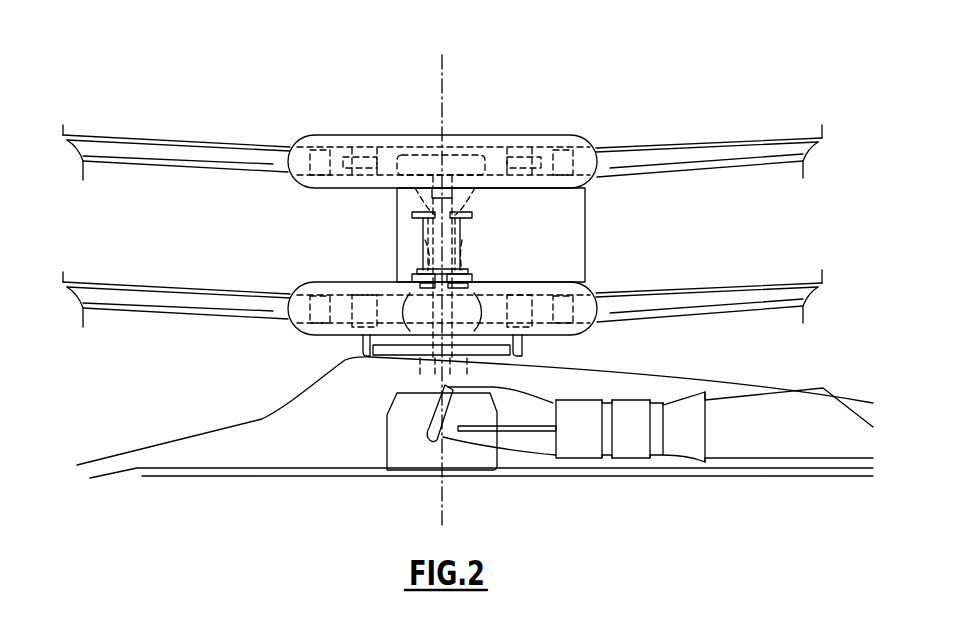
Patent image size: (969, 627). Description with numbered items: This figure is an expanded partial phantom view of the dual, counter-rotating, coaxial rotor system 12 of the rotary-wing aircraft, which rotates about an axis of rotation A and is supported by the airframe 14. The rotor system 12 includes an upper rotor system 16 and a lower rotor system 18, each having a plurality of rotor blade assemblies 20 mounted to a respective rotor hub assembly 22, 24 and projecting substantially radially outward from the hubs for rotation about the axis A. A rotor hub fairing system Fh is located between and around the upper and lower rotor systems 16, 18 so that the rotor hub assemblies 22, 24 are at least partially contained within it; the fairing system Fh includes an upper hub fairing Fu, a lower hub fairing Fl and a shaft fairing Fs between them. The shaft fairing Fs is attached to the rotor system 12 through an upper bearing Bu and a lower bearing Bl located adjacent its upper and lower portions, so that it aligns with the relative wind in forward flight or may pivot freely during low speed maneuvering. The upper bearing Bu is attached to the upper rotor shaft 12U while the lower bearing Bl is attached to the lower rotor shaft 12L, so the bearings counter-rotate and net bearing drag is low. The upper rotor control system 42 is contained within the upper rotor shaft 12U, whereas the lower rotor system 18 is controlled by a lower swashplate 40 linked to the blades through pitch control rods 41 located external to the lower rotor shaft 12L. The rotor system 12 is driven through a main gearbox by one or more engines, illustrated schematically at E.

The axis of rotation A is at (443, 70).
The dual, counter-rotating, coaxial rotor system 12 is at (288, 348).
The upper rotor shaft 12U is at (424, 236).
The lower rotor shaft 12L is at (408, 330).
The airframe 14 is at (242, 467).
The upper rotor system 16 is at (620, 131).
The lower rotor system 18 is at (599, 282).
The rotor blade assemblies 20 is at (723, 153).
The rotor hub assembly 22 is at (468, 155).
The rotor hub assembly 24 is at (467, 290).
The lower swashplate 40 is at (396, 356).
The pitch control rod 41 is at (528, 343).
The upper rotor control system 42 is at (460, 237).
The upper bearing Bu is at (475, 213).
The lower bearing Bl is at (468, 270).
The upper hub fairing Fu is at (369, 126).
The lower hub fairing Fl is at (320, 277).
The rotor hub fairing system Fh is at (296, 219).
The shaft fairing Fs is at (567, 237).
The engine E is at (580, 440).